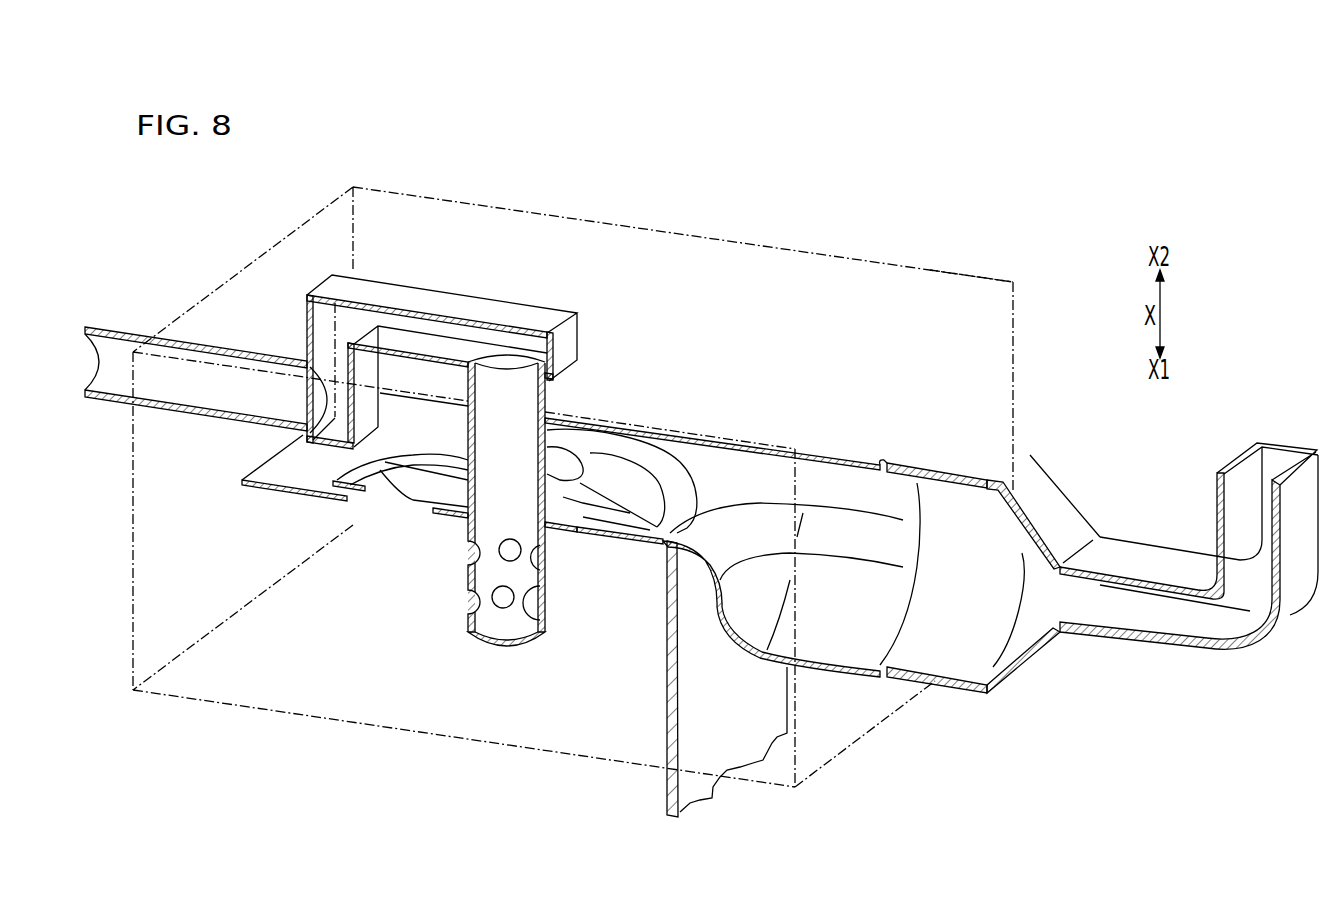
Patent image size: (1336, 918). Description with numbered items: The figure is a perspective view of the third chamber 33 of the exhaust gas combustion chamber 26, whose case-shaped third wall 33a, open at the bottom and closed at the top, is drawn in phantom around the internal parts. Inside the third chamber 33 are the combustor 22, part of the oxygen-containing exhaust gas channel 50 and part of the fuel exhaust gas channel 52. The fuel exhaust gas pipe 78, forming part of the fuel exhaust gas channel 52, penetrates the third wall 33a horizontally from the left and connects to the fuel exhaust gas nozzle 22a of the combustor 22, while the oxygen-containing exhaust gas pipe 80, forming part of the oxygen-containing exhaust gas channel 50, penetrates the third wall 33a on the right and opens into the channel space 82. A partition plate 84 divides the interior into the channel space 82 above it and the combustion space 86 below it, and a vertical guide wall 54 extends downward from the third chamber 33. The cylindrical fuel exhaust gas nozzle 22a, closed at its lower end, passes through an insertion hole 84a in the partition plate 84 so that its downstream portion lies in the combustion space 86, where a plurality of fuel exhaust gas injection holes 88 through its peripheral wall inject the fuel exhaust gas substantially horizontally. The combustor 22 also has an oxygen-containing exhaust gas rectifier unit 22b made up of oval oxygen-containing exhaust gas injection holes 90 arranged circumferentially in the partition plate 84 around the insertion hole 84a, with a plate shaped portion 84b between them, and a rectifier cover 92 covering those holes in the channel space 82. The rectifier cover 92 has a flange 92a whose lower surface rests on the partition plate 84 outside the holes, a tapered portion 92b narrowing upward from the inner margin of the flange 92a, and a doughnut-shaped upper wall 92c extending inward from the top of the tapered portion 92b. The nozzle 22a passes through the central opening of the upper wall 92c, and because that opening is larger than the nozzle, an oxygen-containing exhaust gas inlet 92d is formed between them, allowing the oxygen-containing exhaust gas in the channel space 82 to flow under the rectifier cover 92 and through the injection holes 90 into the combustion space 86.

The combustor 22 is at (517, 450).
The fuel exhaust gas nozzle 22a is at (547, 631).
The oxygen-containing exhaust gas rectifier unit 22b is at (703, 363).
The exhaust gas combustion chamber 26 is at (573, 487).
The third chamber 33 is at (818, 314).
The third wall 33a is at (963, 268).
The oxygen-containing exhaust gas channel 50 is at (1189, 546).
The fuel exhaust gas channel 52 is at (206, 352).
The guide wall 54 is at (666, 708).
The fuel exhaust gas pipe 78 is at (120, 326).
The oxygen-containing exhaust gas pipe 80 is at (1112, 550).
The channel space 82 is at (975, 438).
The partition plate 84 is at (780, 664).
The insertion hole 84a is at (478, 514).
The plate shaped portion 84b is at (562, 514).
The combustion space 86 is at (850, 712).
The fuel exhaust gas injection holes 88 is at (467, 603).
The oxygen-containing exhaust gas injection holes 90 is at (613, 513).
The rectifier cover 92 is at (603, 440).
The flange 92a is at (684, 497).
The tapered portion 92b is at (633, 502).
The upper wall 92c is at (446, 440).
The oxygen-containing exhaust gas inlet 92d is at (557, 450).